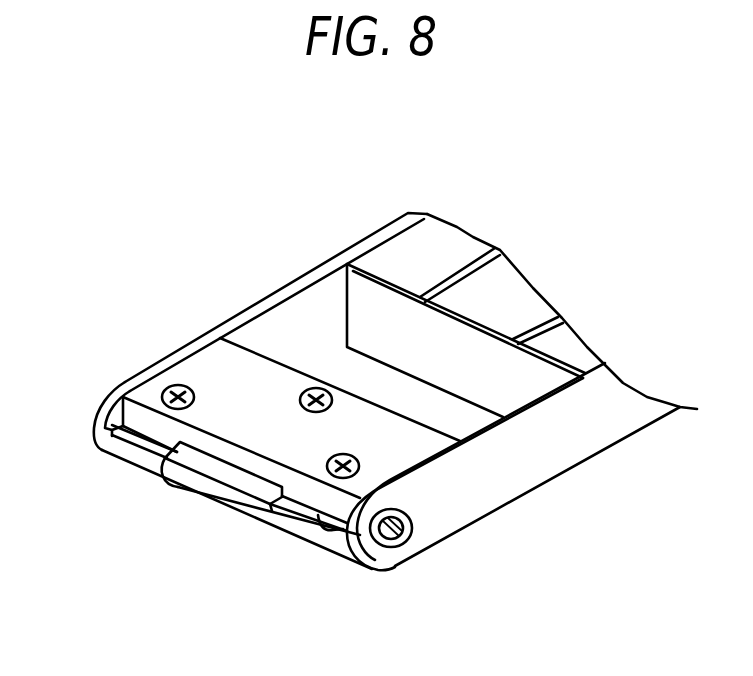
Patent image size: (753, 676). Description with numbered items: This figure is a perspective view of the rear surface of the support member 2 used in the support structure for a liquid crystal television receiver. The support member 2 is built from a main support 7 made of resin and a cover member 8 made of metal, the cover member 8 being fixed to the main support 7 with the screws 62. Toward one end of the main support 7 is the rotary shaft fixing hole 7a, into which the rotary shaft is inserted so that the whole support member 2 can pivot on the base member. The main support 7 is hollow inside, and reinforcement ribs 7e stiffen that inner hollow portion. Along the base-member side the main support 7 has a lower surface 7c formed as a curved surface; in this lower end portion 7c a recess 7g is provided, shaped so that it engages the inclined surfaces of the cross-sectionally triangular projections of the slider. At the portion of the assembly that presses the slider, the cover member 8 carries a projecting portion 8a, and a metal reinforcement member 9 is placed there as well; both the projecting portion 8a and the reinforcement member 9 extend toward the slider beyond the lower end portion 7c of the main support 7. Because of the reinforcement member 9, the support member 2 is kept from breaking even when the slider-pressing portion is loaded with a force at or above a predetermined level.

The support member 2 is at (352, 228).
The main support 7 is at (368, 409).
The rotary shaft fixing hole 7a is at (412, 527).
The lower surface 7c is at (147, 470).
The reinforcement ribs 7e is at (452, 355).
The recess 7g is at (233, 508).
The cover member 8 is at (291, 436).
The projecting portion 8a is at (280, 523).
The reinforcement member 9 is at (180, 488).
The screws 62 is at (170, 386).